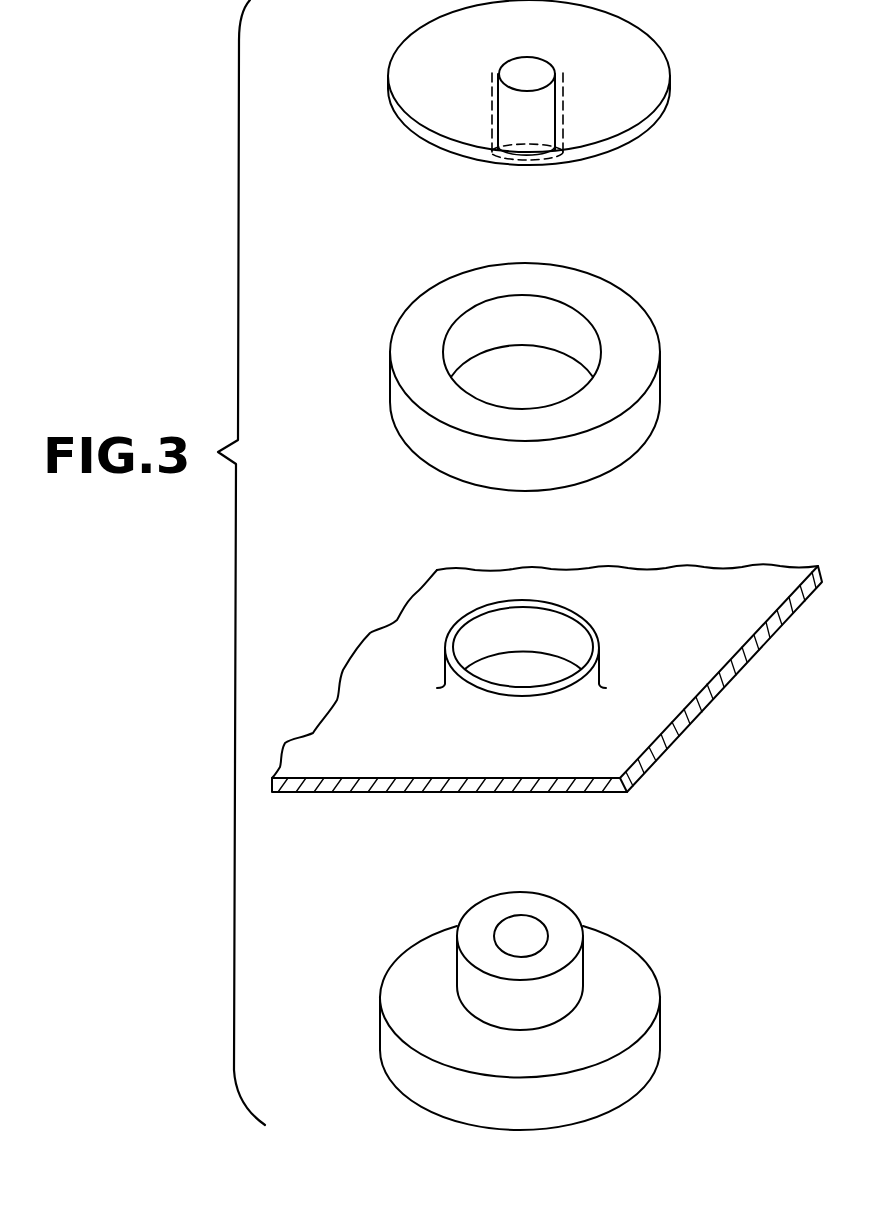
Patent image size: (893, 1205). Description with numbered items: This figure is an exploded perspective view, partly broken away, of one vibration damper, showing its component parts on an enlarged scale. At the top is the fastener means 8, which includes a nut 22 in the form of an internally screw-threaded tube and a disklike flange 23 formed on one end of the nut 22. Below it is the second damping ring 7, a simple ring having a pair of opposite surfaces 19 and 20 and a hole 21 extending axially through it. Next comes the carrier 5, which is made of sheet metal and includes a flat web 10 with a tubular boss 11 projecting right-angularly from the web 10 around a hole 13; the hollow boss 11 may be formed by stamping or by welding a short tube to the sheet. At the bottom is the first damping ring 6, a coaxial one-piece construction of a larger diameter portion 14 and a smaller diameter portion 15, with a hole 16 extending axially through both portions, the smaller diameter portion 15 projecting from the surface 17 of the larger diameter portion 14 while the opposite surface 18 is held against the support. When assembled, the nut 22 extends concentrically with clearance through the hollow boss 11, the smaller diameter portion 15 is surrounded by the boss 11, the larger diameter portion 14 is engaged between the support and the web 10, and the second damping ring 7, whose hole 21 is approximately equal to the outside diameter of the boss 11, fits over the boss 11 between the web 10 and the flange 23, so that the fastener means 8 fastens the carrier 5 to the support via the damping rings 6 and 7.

The carrier 5 is at (566, 654).
The first damping ring 6 is at (520, 1011).
The second damping ring 7 is at (527, 377).
The fastener means 8 is at (559, 94).
The web 10 is at (703, 663).
The tubular boss 11 is at (443, 645).
The hole 13 is at (557, 620).
The larger diameter portion 14 is at (650, 1057).
The smaller diameter portion 15 is at (584, 960).
The hole 16 is at (497, 938).
The other surface 17 is at (397, 995).
The surface 18 is at (628, 1102).
The surface 19 is at (410, 350).
The surface 20 is at (410, 453).
The hole 21 is at (600, 337).
The nut 22 is at (564, 128).
The flange 23 is at (668, 96).